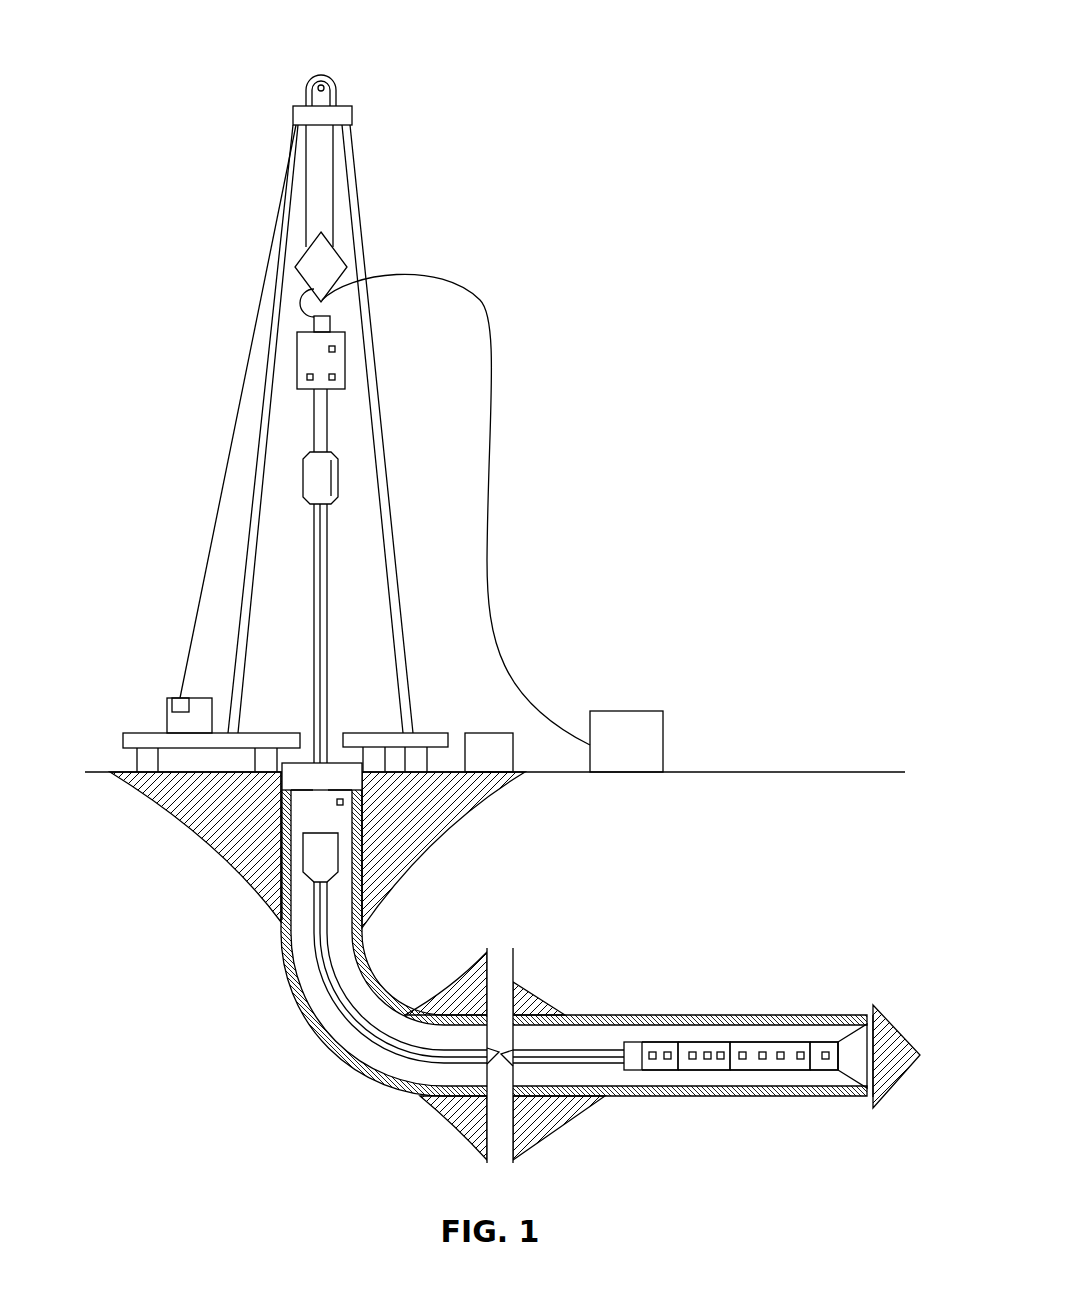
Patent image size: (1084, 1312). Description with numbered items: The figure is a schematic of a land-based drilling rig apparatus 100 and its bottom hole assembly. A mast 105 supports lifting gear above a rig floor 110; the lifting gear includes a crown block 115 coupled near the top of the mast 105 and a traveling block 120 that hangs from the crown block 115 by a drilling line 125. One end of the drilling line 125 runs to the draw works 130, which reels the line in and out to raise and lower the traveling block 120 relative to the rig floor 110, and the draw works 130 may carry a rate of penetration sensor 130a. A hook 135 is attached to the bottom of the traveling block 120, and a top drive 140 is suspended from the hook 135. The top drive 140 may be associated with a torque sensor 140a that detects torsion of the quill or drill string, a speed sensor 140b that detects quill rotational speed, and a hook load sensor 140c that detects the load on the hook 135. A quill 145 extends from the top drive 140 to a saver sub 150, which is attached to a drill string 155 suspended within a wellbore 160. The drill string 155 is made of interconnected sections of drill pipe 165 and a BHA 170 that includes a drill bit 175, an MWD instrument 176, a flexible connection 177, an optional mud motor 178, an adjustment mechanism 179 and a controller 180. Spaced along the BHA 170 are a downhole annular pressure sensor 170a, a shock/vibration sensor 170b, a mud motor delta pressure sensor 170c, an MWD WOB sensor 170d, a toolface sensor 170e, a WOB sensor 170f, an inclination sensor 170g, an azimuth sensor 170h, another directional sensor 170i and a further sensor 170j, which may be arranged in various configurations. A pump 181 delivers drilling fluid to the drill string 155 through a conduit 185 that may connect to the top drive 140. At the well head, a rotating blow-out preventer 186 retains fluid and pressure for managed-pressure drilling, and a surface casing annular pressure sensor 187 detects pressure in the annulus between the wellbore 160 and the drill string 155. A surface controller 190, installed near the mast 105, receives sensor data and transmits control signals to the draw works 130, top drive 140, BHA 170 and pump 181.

The apparatus 100 is at (632, 210).
The mast 105 is at (355, 172).
The rig floor 110 is at (125, 741).
The crown block 115 is at (322, 74).
The traveling block 120 is at (343, 258).
The drilling line 125 is at (306, 178).
The draw works 130 is at (167, 716).
The rate of penetration sensor 130a is at (178, 705).
The hook 135 is at (301, 304).
The top drive 140 is at (297, 345).
The torque sensor 140a is at (306, 377).
The speed sensor 140b is at (336, 349).
The hook load sensor 140c is at (336, 377).
The quill 145 is at (314, 406).
The saver sub 150 is at (303, 480).
The drill string 155 is at (305, 523).
The wellbore 160 is at (305, 1003).
The drill pipe 165 is at (313, 722).
The bottom hole assembly 170 is at (842, 1046).
The downhole annular pressure sensor 170a is at (652, 1060).
The shock/vibration sensor 170b is at (667, 1060).
The mud motor delta pressure sensor 170c is at (692, 1050).
The MWD WOB sensor 170d is at (707, 1060).
The toolface sensor 170e is at (722, 1060).
The WOB sensor 170f is at (742, 1050).
The inclination sensor 170g is at (762, 1050).
The azimuth sensor 170h is at (782, 1060).
The directional sensor 170i is at (800, 1050).
The sensor 170j is at (828, 1060).
The drill bit 175 is at (862, 1035).
The measurement-while-drilling instrument 176 is at (648, 1043).
The flexible connection 177 is at (703, 1048).
The motor 178 is at (758, 1070).
The adjustment mechanism 179 is at (840, 1063).
The controller 180 is at (624, 1046).
The pump 181 is at (628, 711).
The conduit 185 is at (490, 458).
The rotating blow-out preventer 186 is at (282, 806).
The surface casing annular pressure sensor 187 is at (344, 804).
The controller 190 is at (485, 733).